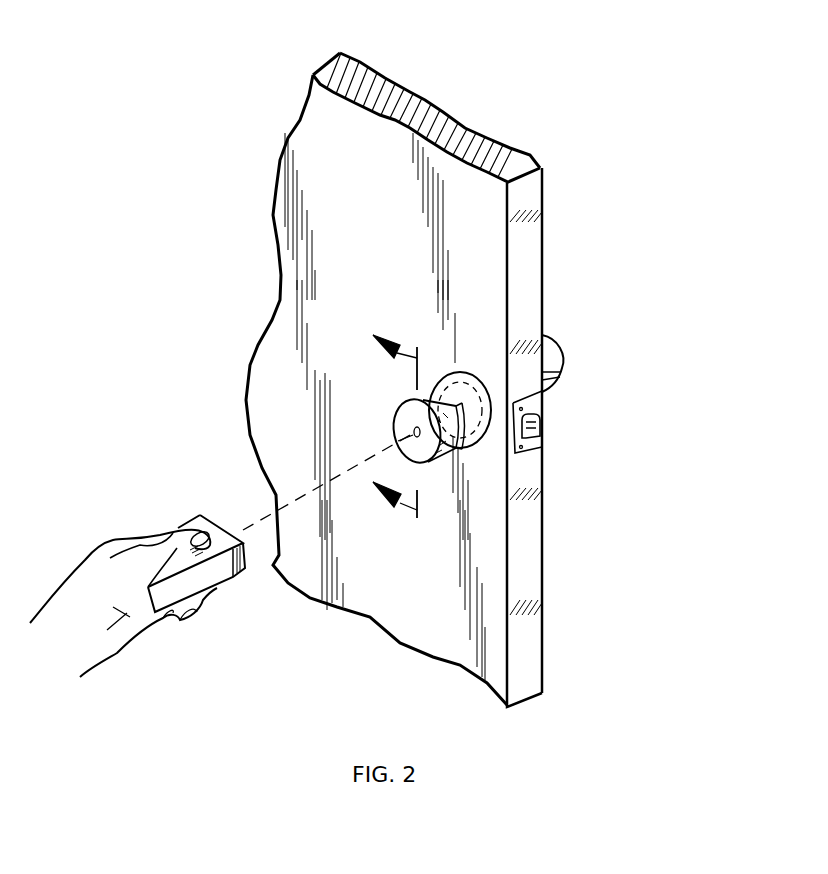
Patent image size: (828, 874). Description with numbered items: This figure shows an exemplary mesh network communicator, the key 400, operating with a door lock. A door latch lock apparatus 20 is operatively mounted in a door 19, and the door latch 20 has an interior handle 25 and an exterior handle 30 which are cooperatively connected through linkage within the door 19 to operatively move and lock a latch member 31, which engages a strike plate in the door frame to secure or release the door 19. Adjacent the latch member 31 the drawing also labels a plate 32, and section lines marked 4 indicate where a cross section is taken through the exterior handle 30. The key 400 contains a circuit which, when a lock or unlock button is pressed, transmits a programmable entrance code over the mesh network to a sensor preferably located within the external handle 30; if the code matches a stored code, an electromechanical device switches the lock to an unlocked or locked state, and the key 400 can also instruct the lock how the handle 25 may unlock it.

The door 19 is at (530, 260).
The door latch lock apparatus 20 is at (468, 363).
The exterior handle 30 is at (402, 402).
The interior handle 25 is at (560, 372).
The latch member 31 is at (533, 425).
The latch plate 32 is at (525, 445).
The section line 4 is at (383, 415).
The key 400 is at (233, 617).